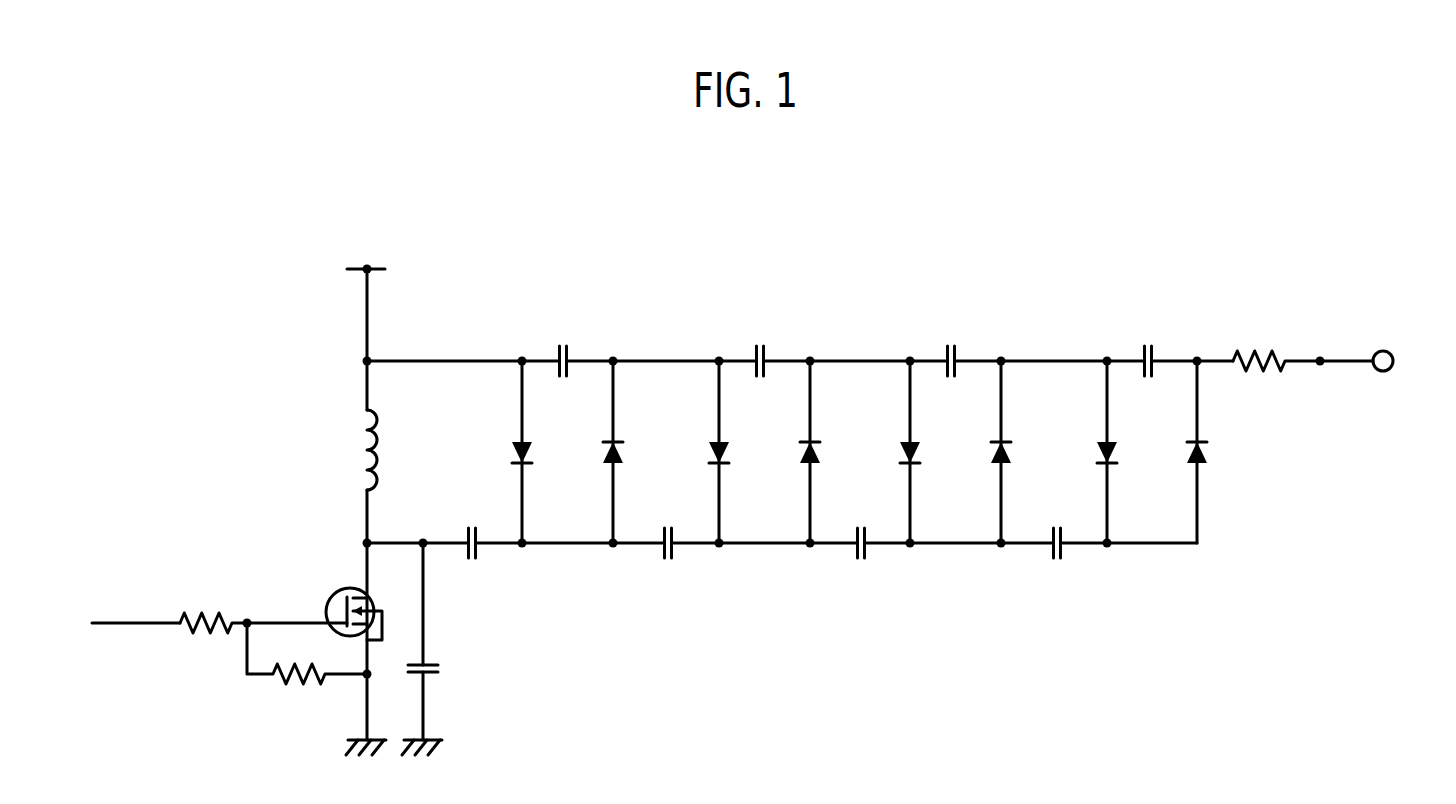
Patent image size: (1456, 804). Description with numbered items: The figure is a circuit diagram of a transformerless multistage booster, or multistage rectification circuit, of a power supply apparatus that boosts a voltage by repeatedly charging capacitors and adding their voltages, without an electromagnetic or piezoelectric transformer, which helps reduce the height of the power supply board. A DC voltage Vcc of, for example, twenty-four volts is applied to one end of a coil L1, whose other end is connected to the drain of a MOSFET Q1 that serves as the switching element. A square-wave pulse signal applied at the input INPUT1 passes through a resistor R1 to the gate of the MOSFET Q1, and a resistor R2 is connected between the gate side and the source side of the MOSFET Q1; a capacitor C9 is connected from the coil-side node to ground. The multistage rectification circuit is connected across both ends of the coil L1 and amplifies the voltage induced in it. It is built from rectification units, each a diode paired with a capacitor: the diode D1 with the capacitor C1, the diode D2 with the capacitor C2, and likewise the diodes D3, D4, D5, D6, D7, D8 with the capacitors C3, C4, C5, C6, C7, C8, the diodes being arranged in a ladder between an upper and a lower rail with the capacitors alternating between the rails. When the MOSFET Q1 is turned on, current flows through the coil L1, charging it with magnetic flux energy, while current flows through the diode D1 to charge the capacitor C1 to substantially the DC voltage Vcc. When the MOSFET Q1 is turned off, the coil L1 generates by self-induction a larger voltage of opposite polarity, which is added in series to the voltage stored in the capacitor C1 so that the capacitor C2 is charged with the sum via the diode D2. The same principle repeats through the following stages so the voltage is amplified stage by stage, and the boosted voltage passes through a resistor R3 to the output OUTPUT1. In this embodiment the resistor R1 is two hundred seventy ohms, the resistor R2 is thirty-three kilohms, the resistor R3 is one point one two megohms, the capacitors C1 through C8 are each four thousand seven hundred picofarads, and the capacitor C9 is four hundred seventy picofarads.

The DC voltage Vcc is at (354, 316).
The coil L1 is at (347, 479).
The MOSFET Q1 is at (316, 649).
The input INPUT1 is at (122, 604).
The resistor R1 is at (216, 602).
The resistor R2 is at (307, 671).
The resistor R3 is at (1276, 346).
The capacitor C1 is at (471, 562).
The capacitor C2 is at (568, 343).
The capacitor C3 is at (668, 562).
The capacitor C4 is at (760, 343).
The capacitor C5 is at (856, 562).
The capacitor C6 is at (950, 343).
The capacitor C7 is at (1060, 562).
The capacitor C8 is at (1145, 345).
The capacitor C9 is at (440, 647).
The diode D1 is at (501, 452).
The diode D2 is at (593, 452).
The diode D3 is at (698, 452).
The diode D4 is at (790, 452).
The diode D5 is at (890, 452).
The diode D6 is at (981, 452).
The diode D7 is at (1088, 452).
The diode D8 is at (1177, 450).
The output OUTPUT1 is at (1377, 342).